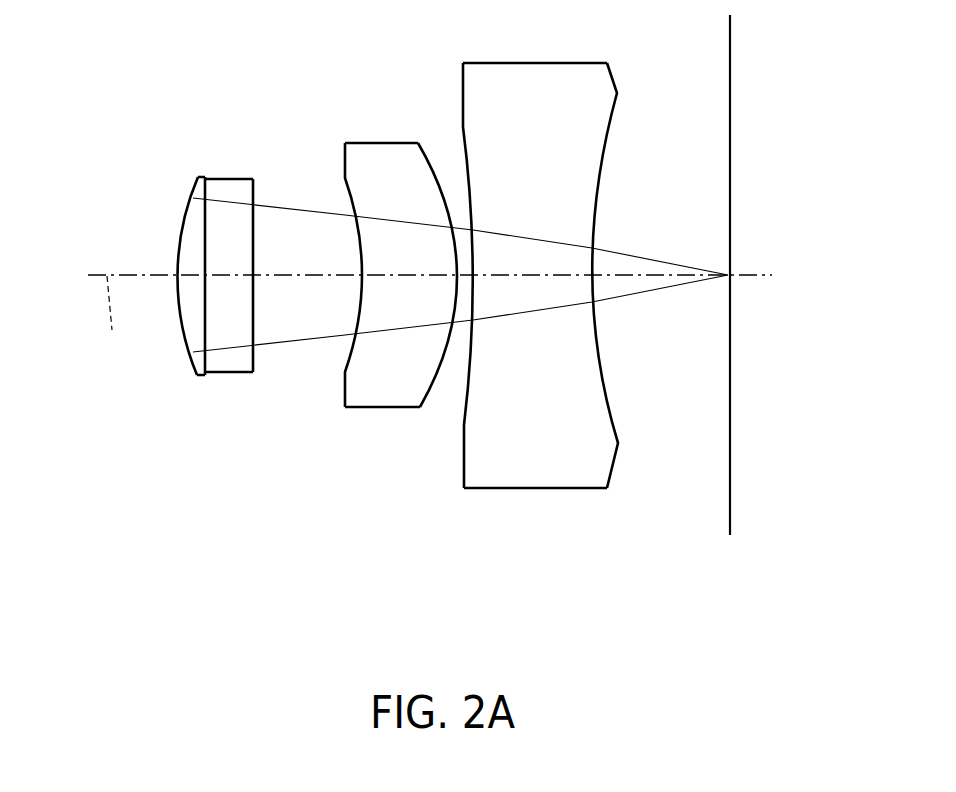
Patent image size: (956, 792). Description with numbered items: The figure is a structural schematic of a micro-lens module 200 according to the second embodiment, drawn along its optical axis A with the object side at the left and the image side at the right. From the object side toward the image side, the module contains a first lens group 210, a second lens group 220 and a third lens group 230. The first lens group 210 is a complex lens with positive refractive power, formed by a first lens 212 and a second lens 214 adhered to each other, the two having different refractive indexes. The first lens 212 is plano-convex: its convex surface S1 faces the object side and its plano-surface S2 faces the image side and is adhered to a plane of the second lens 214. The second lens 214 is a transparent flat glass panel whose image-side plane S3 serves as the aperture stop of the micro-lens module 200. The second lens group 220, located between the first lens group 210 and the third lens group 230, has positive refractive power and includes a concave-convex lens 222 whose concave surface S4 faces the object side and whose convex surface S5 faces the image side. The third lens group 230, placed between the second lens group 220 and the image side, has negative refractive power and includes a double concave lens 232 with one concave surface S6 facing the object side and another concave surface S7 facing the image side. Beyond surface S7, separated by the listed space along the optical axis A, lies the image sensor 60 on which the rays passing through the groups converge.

The micro-lens module 200 is at (436, 306).
The first lens group 210 is at (216, 291).
The first lens 212 is at (191, 271).
The second lens 214 is at (249, 277).
The second lens group 220 is at (387, 269).
The concave-convex lens 222 is at (387, 245).
The third lens group 230 is at (533, 280).
The double concave lens 232 is at (533, 247).
The image sensor 60 is at (731, 482).
The optical axis A is at (110, 321).
The convex surface S1 is at (173, 216).
The plano-surface S2 is at (208, 190).
The plane S3 is at (262, 191).
The concave surface S4 is at (340, 192).
The convex surface S5 is at (420, 166).
The concave surface S6 is at (453, 134).
The concave surface S7 is at (625, 89).